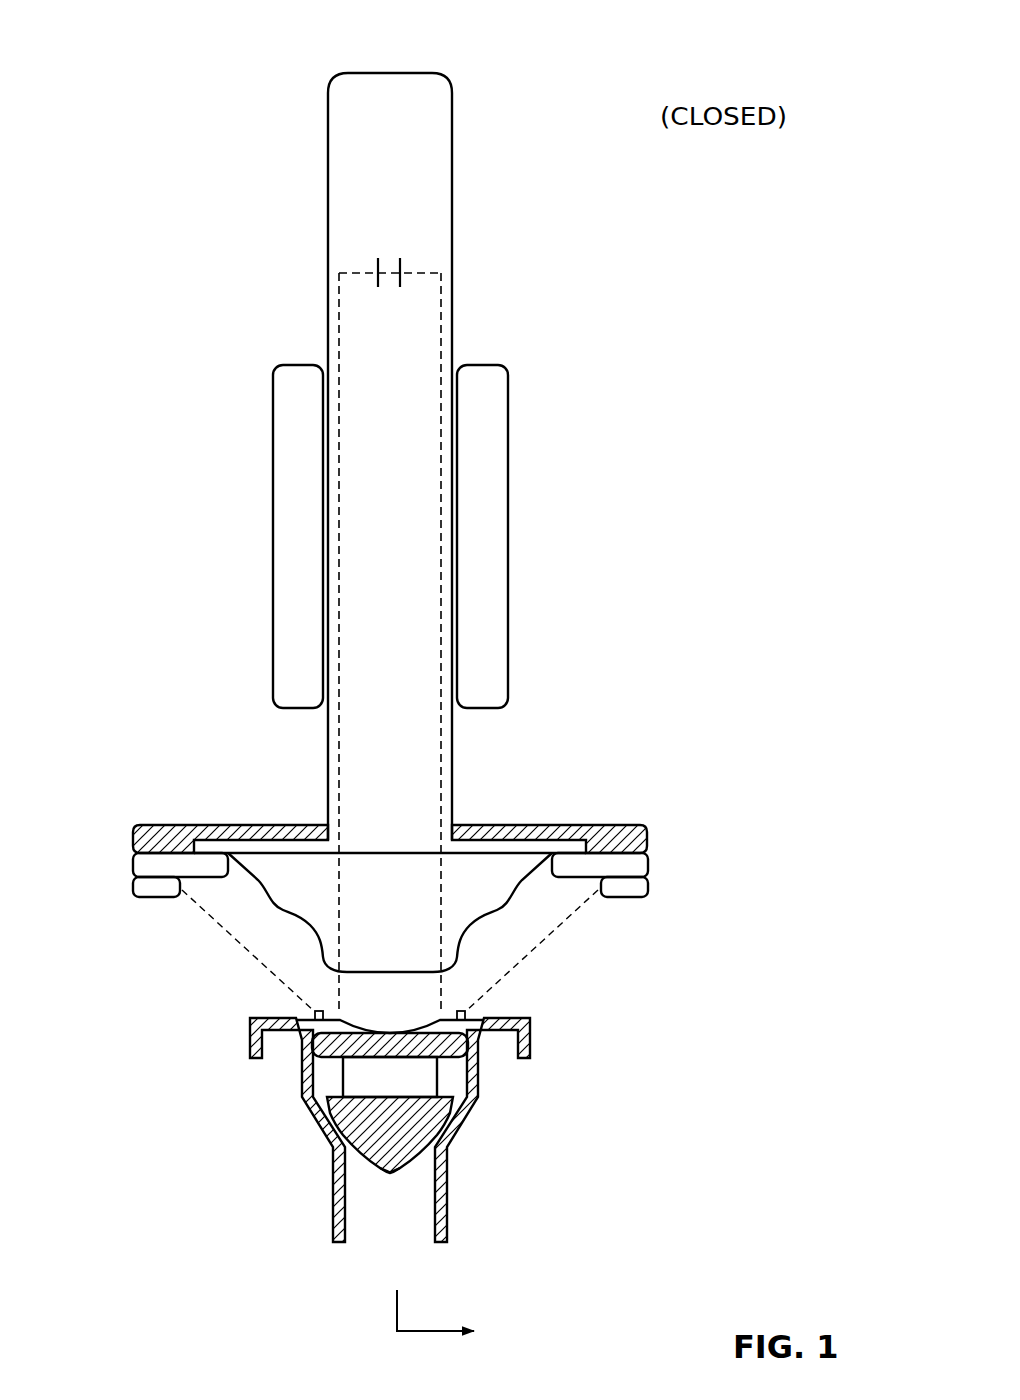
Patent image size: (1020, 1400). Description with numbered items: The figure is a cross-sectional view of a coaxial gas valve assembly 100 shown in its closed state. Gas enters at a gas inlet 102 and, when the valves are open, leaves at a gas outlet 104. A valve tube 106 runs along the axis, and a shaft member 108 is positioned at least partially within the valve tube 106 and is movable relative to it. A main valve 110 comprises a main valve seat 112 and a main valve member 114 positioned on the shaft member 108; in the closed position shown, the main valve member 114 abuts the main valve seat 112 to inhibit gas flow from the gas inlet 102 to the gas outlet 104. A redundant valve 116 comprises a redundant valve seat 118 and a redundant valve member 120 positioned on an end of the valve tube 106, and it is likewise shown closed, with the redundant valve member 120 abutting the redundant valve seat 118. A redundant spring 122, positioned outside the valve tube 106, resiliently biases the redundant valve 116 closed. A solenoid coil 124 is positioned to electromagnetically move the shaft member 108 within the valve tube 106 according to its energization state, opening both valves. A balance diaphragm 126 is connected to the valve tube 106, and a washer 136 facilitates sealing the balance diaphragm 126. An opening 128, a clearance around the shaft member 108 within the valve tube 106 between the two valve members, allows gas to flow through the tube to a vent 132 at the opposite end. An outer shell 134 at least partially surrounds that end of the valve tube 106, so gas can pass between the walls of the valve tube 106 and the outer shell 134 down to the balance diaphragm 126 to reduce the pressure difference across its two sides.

The coaxial gas valve assembly 100 is at (226, 40).
The gas inlet 102 is at (145, 975).
The gas outlet 104 is at (548, 1343).
The valve tube 106 is at (400, 874).
The shaft member 108 is at (384, 1133).
The main valve 110 is at (357, 1173).
The main valve seat 112 is at (313, 1110).
The main valve member 114 is at (362, 1131).
The redundant valve 116 is at (351, 1130).
The redundant valve seat 118 is at (470, 1032).
The redundant valve member 120 is at (322, 1047).
The redundant spring 122 is at (510, 984).
The solenoid coil 124 is at (492, 452).
The balance diaphragm 126 is at (510, 905).
The opening 128 is at (428, 1066).
The vent 132 is at (372, 284).
The outer shell 134 is at (360, 125).
The washer 136 is at (662, 857).